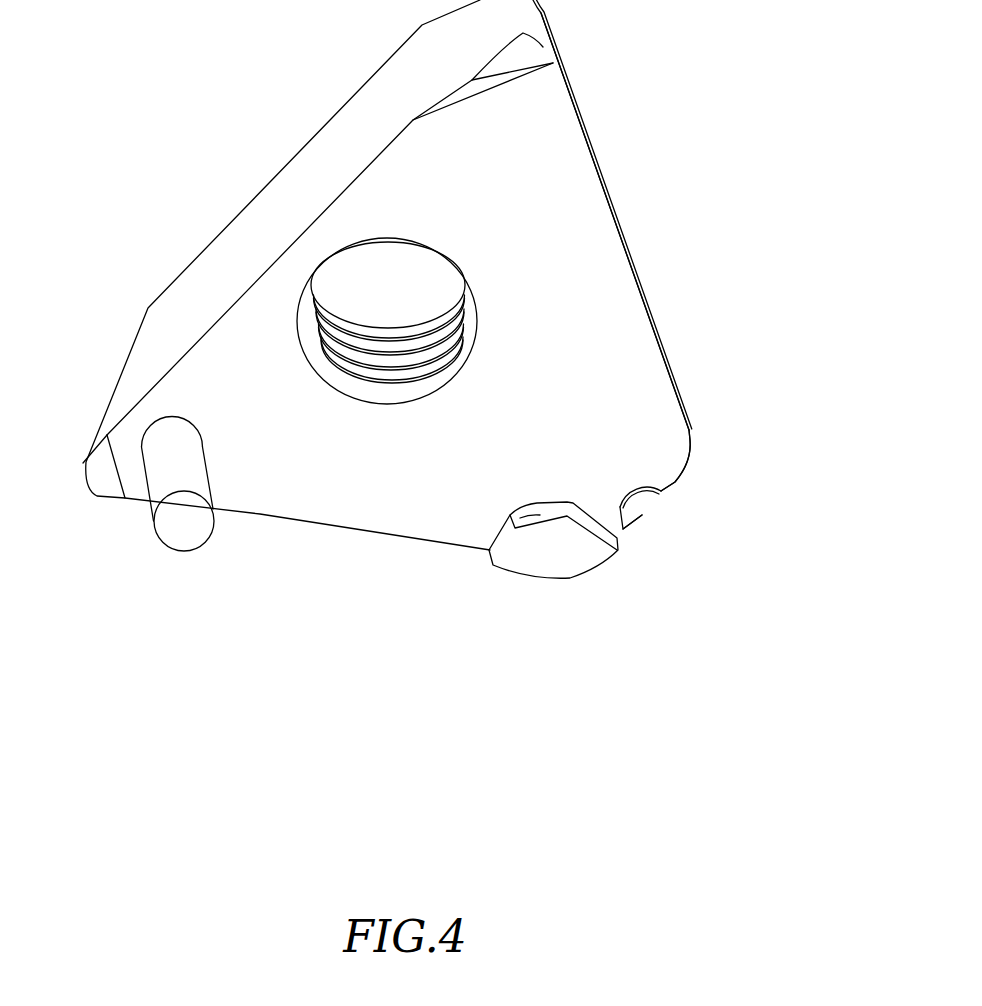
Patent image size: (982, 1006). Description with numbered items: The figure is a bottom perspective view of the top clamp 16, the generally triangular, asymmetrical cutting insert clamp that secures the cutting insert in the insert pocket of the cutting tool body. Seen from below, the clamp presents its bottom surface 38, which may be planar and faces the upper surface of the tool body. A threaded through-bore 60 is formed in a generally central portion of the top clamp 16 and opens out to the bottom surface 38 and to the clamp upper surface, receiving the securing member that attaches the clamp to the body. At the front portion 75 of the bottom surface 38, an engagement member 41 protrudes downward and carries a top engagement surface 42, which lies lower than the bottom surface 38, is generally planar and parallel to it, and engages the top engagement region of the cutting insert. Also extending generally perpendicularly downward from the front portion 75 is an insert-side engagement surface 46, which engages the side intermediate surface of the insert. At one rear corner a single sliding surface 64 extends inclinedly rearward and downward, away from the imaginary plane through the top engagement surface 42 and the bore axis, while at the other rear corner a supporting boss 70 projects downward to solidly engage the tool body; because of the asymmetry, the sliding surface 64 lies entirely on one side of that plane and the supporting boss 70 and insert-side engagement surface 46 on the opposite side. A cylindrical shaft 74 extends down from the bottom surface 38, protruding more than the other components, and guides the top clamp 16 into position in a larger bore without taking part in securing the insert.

The top clamp 16 is at (297, 666).
The bottom surface 38 is at (582, 205).
The single sliding surface 64 is at (527, 82).
The supporting boss 70 is at (102, 478).
The shaft 74 is at (156, 483).
The through-bore 60 is at (383, 355).
The insert-side engagement surface 46 is at (515, 530).
The top engagement surface 42 is at (642, 534).
The engagement member 41 is at (637, 518).
The front portion 75 is at (706, 489).